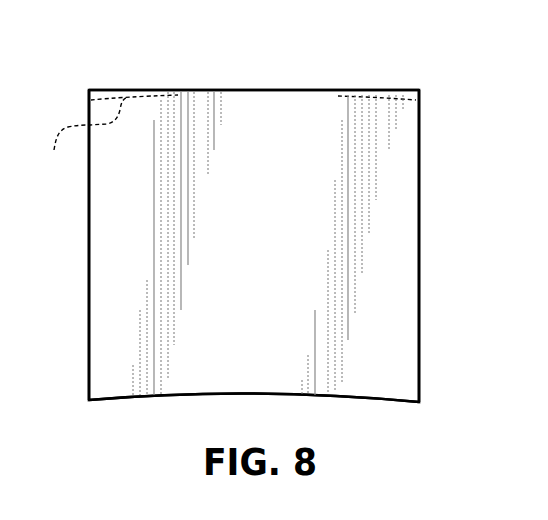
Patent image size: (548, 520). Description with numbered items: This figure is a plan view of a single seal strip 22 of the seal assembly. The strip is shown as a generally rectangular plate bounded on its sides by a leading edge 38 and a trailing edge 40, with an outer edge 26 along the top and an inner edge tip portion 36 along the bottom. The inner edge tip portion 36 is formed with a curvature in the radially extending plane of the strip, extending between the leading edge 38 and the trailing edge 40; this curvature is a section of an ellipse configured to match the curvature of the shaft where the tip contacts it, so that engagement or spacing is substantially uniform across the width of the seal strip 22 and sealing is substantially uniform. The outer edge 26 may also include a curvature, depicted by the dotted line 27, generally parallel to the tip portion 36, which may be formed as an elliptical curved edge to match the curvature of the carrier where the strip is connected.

The seal strip 22 is at (424, 91).
The outer edge 26 is at (263, 90).
The dotted line 27 is at (84, 134).
The inner edge tip portion 36 is at (198, 397).
The leading edge 38 is at (88, 283).
The trailing edge 40 is at (419, 350).